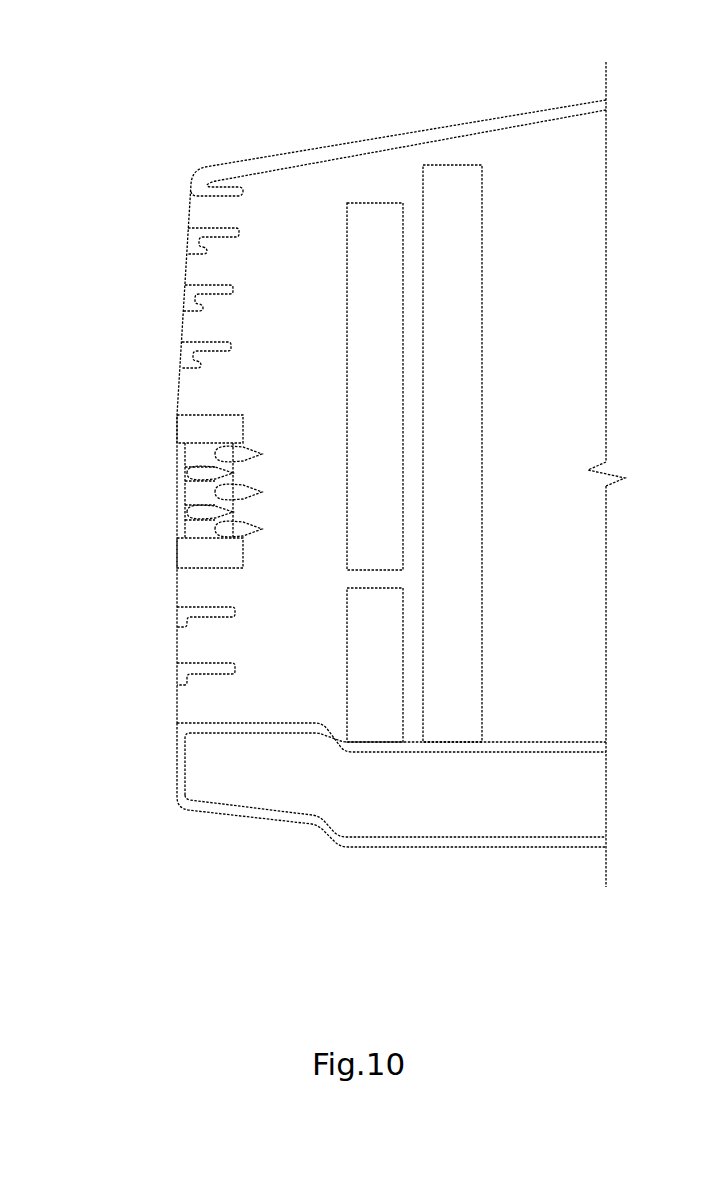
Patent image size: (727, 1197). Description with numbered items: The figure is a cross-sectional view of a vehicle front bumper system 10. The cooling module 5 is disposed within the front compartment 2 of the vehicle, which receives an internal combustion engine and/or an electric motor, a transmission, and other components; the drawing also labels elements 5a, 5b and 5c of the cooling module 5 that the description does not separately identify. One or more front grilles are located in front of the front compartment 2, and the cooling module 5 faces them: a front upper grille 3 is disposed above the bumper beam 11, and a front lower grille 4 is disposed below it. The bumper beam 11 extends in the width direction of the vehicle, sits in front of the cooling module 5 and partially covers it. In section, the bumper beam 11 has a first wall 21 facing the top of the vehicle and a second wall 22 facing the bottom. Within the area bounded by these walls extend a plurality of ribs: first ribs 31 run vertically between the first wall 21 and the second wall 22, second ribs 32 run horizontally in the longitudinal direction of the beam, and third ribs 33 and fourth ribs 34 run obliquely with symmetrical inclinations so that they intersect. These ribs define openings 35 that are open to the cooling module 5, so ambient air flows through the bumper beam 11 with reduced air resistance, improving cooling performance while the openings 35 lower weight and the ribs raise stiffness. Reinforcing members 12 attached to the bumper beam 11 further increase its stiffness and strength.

The front compartment 2 is at (205, 31).
The front upper grille 3 is at (166, 322).
The front lower grille 4 is at (166, 643).
The cooling module 5 is at (507, 356).
The upper substrate portion 5a is at (367, 384).
The lower substrate portion 5b is at (367, 656).
The rear substrate portion 5c is at (463, 452).
The vehicle front bumper system 10 is at (116, 489).
The bumper beam 11 is at (163, 432).
The reinforcing members 12 is at (250, 456).
The first wall 21 is at (224, 429).
The second wall 22 is at (224, 553).
The first ribs 31 is at (196, 455).
The second ribs 32 is at (208, 492).
The third ribs 33 is at (205, 473).
The fourth ribs 34 is at (192, 512).
The openings 35 is at (190, 527).